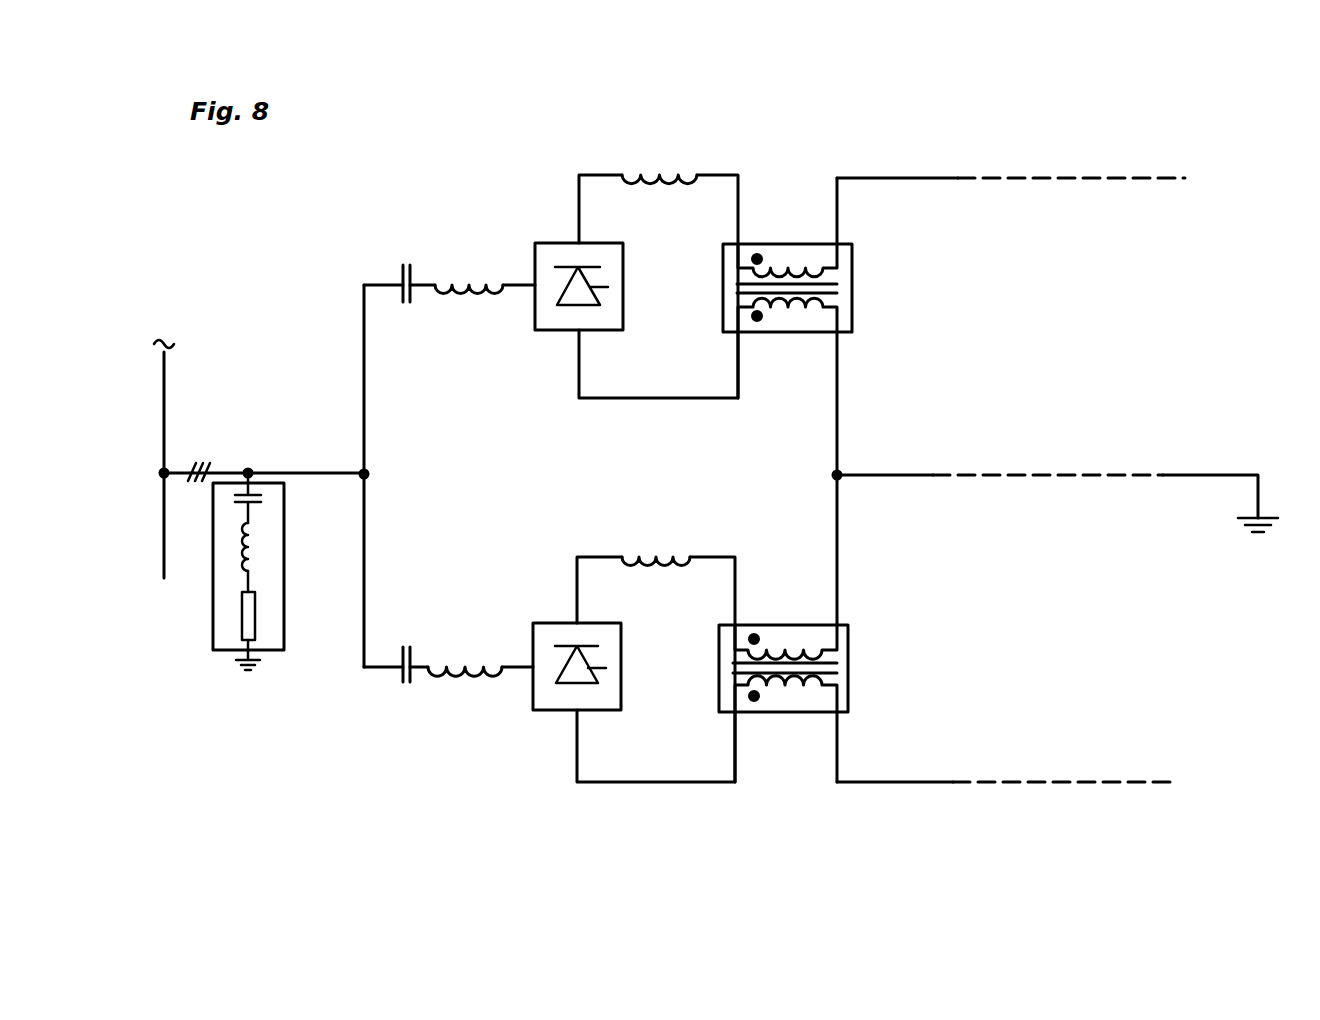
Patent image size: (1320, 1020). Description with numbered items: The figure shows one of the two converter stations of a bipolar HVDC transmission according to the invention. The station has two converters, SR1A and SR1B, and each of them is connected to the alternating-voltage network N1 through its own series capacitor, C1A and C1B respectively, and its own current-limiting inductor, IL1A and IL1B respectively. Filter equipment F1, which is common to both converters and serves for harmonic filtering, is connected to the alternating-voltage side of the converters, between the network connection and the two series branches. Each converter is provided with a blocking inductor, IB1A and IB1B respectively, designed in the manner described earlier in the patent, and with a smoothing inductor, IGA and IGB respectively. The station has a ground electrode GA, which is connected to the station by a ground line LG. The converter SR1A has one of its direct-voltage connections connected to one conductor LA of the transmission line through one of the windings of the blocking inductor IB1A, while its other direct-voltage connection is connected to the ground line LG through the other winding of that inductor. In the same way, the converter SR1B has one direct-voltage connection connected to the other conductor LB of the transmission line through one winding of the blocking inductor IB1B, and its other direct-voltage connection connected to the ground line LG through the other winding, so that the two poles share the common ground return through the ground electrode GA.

The network N1 is at (162, 535).
The filter equipment F1 is at (284, 625).
The series capacitor C1A is at (405, 263).
The series capacitor C1B is at (402, 645).
The current-limiting inductor IL1A is at (468, 283).
The current-limiting inductor IL1B is at (465, 665).
The converter SR1A is at (594, 332).
The converter SR1B is at (594, 712).
The smoothing inductor IGA is at (660, 175).
The smoothing inductor IGB is at (655, 557).
The blocking inductor IB1A is at (790, 244).
The blocking inductor IB1B is at (785, 625).
The conductor of the transmission line LA is at (1031, 178).
The conductor of the transmission line LB is at (1015, 782).
The ground line LG is at (1027, 476).
The ground electrode GA is at (1238, 524).